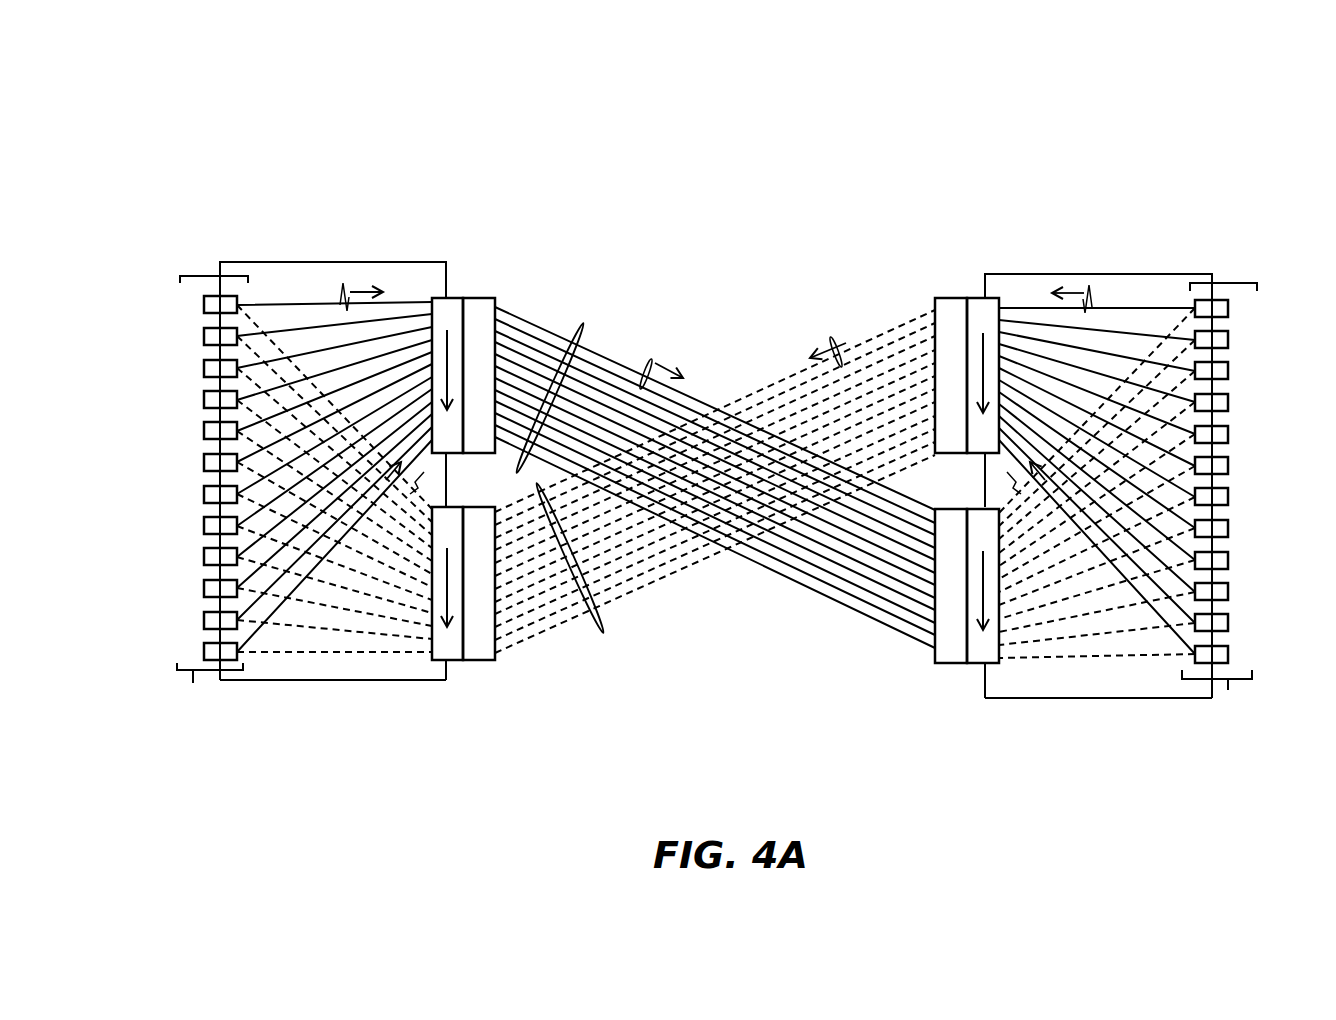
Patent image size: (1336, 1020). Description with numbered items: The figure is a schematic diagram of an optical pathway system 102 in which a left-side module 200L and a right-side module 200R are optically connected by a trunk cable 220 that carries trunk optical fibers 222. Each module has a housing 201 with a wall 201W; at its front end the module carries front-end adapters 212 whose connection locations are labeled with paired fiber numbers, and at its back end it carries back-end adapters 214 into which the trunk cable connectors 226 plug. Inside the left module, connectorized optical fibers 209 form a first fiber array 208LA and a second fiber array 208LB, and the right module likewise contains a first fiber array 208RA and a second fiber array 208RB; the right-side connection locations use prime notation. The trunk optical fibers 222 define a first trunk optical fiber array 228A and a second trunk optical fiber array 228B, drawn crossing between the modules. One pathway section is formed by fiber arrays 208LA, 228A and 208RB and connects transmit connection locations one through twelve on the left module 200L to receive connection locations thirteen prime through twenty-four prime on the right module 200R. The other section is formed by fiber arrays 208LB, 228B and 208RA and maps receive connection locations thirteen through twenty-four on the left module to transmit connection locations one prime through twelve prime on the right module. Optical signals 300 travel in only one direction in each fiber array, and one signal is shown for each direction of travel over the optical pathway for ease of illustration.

The optical pathway system 102 is at (333, 110).
The housing 201 is at (714, 503).
The wall 201W is at (383, 681).
The front-end adapters 212 is at (203, 276).
The left-side module 200L is at (659, 454).
The right-side module 200R is at (1165, 455).
The first fiber array 208LA is at (315, 289).
The second fiber array 208LB is at (278, 663).
The first fiber array 208RA is at (1115, 297).
The second fiber array 208RB is at (1112, 668).
The connectorized optical fibers 209 is at (350, 654).
The back-end adapters 214 is at (456, 298).
The connectors 226 is at (478, 298).
The trunk cable 220 is at (715, 477).
The trunk optical fibers 222 is at (848, 612).
The first trunk optical fiber array 228A is at (575, 327).
The second trunk optical fiber array 228B is at (590, 620).
The optical signals 300 is at (643, 357).